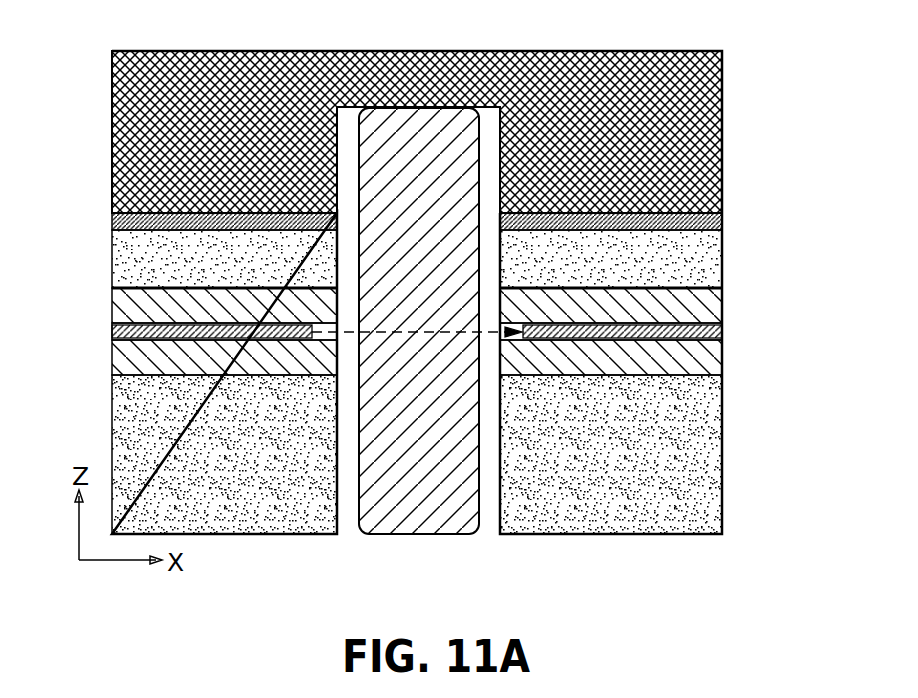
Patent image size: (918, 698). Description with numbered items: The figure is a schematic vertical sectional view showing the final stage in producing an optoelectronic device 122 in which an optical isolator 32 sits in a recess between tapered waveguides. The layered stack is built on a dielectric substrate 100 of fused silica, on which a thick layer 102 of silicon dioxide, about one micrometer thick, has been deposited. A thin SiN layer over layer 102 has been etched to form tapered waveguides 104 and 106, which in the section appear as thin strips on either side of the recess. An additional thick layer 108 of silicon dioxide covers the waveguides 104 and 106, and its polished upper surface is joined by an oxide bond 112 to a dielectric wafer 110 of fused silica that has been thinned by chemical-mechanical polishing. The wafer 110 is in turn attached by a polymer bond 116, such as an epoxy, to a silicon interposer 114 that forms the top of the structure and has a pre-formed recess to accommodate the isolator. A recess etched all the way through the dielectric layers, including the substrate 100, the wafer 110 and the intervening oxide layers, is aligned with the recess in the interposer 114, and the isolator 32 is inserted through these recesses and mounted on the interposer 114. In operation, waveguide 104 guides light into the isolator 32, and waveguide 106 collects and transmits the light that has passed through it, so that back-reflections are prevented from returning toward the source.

The optoelectronic device 122 is at (763, 72).
The interposer 114 is at (723, 105).
The polymer bond 116 is at (723, 221).
The oxide bond 112 is at (117, 287).
The dielectric wafer 110 is at (723, 242).
The thick layer of SiO2 108 is at (723, 300).
The tapered waveguide 106 is at (723, 332).
The tapered waveguide 104 is at (113, 333).
The thick layer of SiO2 102 is at (723, 355).
The dielectric substrate 100 is at (723, 482).
The optical isolator 32 is at (403, 520).